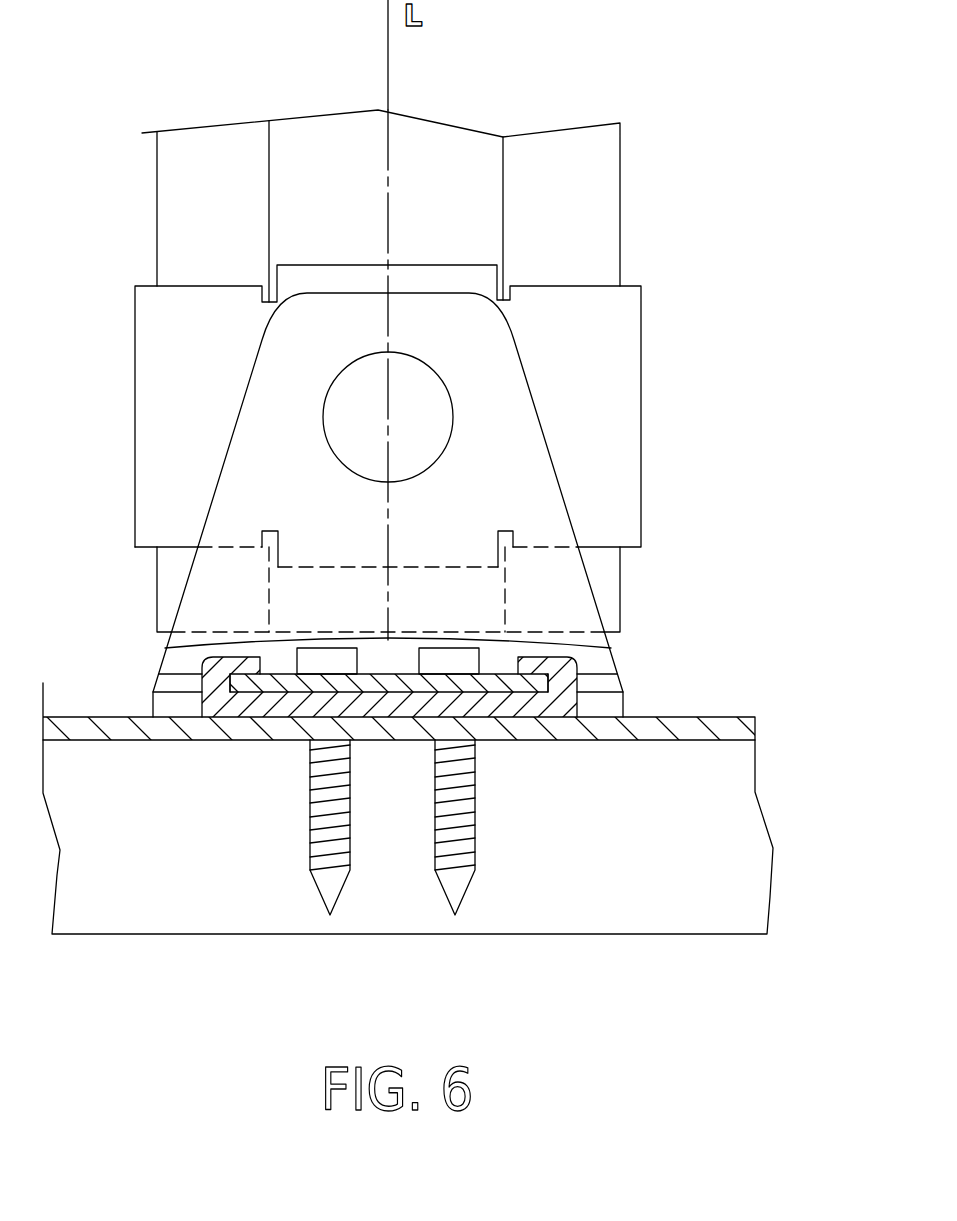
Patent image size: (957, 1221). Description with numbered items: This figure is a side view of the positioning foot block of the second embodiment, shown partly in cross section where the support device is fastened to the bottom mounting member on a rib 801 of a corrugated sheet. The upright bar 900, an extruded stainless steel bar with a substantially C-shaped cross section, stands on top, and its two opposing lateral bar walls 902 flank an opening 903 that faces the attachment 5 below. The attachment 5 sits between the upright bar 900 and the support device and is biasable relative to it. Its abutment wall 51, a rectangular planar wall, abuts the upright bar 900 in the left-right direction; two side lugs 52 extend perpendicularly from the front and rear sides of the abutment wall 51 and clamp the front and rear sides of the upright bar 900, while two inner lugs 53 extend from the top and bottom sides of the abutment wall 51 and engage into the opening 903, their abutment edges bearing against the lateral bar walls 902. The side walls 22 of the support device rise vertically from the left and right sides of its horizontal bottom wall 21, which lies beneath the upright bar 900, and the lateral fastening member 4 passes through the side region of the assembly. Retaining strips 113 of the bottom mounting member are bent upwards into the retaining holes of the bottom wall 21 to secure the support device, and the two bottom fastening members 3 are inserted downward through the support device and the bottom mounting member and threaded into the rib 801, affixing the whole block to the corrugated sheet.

The upright bar 900 is at (439, 166).
The lateral bar walls 902 is at (212, 155).
The opening 903 is at (330, 165).
The inner lugs 53 is at (435, 277).
The side lugs 52 is at (135, 310).
The attachment 5 is at (369, 400).
The abutment wall 51 is at (172, 468).
The lateral fastening member 4 is at (440, 420).
The side walls 22 is at (446, 505).
The bottom wall 21 is at (275, 683).
The retaining strips 113 is at (550, 640).
The rib 801 is at (718, 728).
The bottom fastening members 3 is at (457, 882).